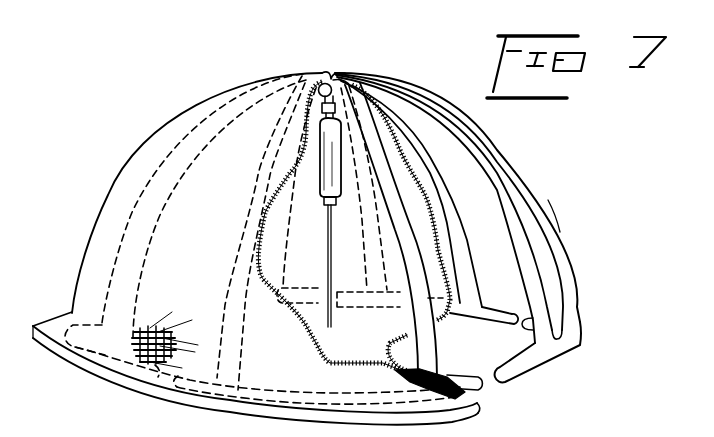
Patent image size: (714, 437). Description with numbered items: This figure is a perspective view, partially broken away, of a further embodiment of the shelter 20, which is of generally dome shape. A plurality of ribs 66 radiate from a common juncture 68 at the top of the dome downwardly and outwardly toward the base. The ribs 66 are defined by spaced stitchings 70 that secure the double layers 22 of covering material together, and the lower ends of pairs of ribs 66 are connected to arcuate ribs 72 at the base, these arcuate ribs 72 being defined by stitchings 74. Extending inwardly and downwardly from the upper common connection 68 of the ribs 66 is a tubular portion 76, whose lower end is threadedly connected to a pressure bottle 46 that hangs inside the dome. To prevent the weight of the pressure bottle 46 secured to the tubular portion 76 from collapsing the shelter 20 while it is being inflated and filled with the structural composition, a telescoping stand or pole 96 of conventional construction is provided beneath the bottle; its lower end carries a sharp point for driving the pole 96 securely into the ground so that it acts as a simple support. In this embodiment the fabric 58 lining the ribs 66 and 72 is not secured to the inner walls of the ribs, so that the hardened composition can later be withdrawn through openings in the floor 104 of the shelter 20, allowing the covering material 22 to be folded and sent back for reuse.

The shelter 20 is at (190, 76).
The double layers 22 is at (297, 323).
The pressure bottle 46 is at (336, 190).
The fabric 58 is at (450, 382).
The ribs 66 is at (172, 192).
The common juncture 68 is at (350, 64).
The stitchings 70 is at (113, 270).
The arcuate ribs 72 is at (258, 387).
The stitchings 74 is at (293, 393).
The tubular portion 76 is at (325, 76).
The telescoping stand or pole 96 is at (360, 278).
The floor 104 is at (443, 315).